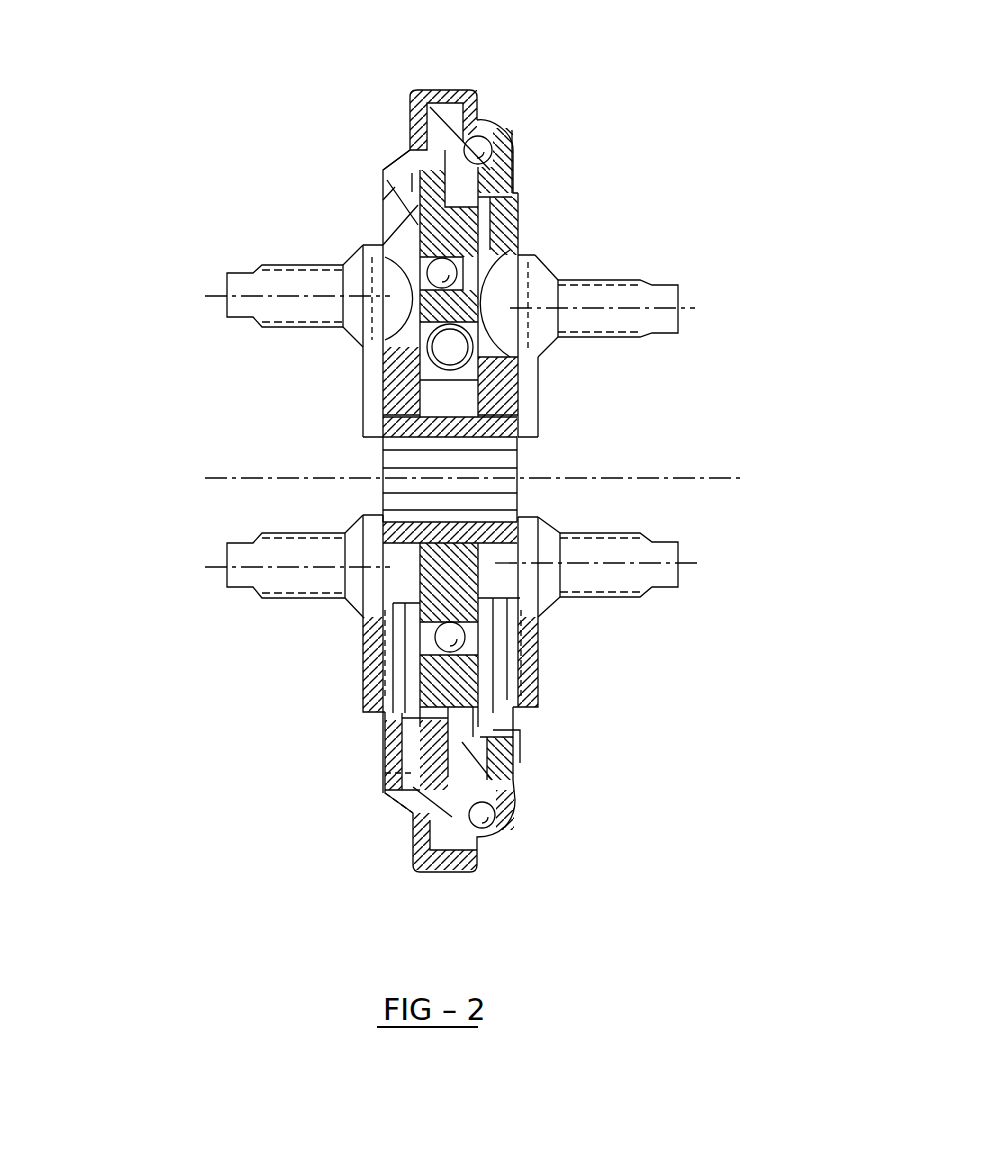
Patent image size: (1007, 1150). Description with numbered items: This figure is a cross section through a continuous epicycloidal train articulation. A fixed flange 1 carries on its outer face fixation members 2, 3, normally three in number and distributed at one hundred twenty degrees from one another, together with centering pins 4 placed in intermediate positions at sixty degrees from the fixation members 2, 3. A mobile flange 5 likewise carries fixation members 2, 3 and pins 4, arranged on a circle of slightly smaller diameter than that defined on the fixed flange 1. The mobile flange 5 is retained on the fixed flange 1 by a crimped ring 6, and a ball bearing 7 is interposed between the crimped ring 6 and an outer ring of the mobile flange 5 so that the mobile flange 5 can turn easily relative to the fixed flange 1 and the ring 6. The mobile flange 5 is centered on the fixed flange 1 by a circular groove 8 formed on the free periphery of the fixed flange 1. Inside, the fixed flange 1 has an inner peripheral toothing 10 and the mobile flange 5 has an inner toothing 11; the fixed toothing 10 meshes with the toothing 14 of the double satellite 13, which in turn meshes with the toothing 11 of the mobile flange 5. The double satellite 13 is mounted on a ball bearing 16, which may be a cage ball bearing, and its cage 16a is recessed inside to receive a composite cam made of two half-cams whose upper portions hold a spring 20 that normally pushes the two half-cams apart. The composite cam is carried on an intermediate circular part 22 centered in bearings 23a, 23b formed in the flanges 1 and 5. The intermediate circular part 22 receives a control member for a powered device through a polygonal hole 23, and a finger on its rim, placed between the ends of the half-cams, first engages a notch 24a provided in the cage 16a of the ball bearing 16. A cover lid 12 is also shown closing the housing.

The fixed flange 1 is at (402, 208).
The fixation member 2 is at (623, 292).
The fixation member 3 is at (298, 552).
The centering pin 4 is at (363, 392).
The mobile flange 5 is at (503, 237).
The crimped ring 6 is at (440, 88).
The ball bearing 7 is at (498, 122).
The circular groove 8 is at (428, 858).
The inner peripheral toothing 10 is at (410, 808).
The inner toothing 11 is at (512, 197).
The cover lid 12 is at (402, 150).
The double satellite 13 is at (437, 235).
The toothing 14 is at (467, 720).
The ball bearing 16 is at (438, 272).
The cage 16a is at (480, 303).
The spring 20 is at (477, 347).
The intermediate circular part 22 is at (430, 525).
The polygonal hole 23 is at (502, 463).
The bearing 23a is at (368, 582).
The bearing 23b is at (503, 545).
The notch 24a is at (420, 597).